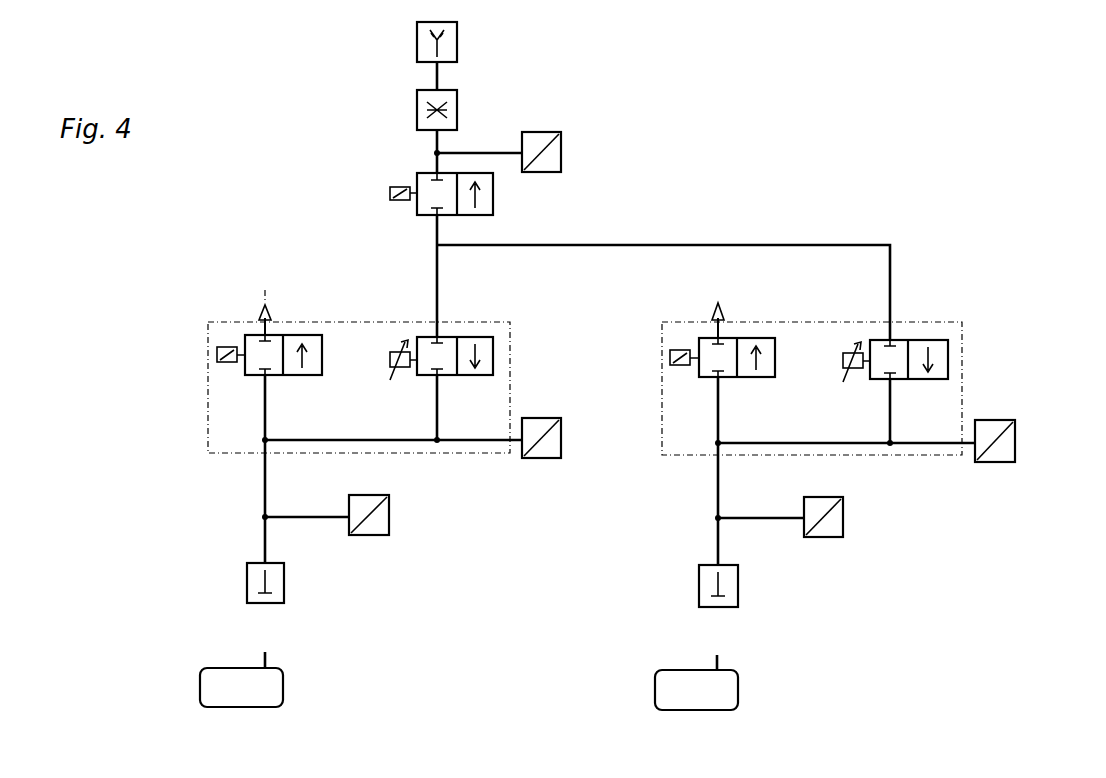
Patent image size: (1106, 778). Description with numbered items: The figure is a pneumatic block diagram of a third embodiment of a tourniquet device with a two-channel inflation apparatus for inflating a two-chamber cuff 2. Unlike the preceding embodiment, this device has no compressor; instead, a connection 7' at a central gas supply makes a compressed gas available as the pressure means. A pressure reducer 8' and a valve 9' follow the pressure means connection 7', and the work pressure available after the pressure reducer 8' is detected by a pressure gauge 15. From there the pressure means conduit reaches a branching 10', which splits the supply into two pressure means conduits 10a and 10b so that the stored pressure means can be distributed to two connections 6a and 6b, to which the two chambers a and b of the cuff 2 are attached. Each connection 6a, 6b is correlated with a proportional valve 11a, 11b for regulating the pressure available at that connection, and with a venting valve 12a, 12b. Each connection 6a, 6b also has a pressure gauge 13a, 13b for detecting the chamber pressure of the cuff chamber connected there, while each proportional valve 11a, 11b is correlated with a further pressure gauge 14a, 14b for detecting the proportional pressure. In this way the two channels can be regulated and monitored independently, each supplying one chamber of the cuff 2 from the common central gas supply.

The two-chamber cuff 2 is at (298, 700).
The connection 6a is at (284, 585).
The connection 6b is at (738, 592).
The connection at a central gas supply 7' is at (400, 42).
The pressure reducer 8' is at (464, 110).
The valve 9' is at (471, 196).
The branching 10' is at (623, 292).
The pressure means conduit 10a is at (437, 297).
The pressure means conduit 10b is at (707, 245).
The proportional valve 11a is at (497, 350).
The proportional valve 11b is at (950, 347).
The venting valve 12a is at (240, 377).
The venting valve 12b is at (772, 338).
The pressure gauge 13a is at (372, 535).
The pressure gauge 13b is at (828, 538).
The pressure gauge 14a is at (561, 440).
The pressure gauge 14b is at (1015, 442).
The pressure gauge 15 is at (561, 145).